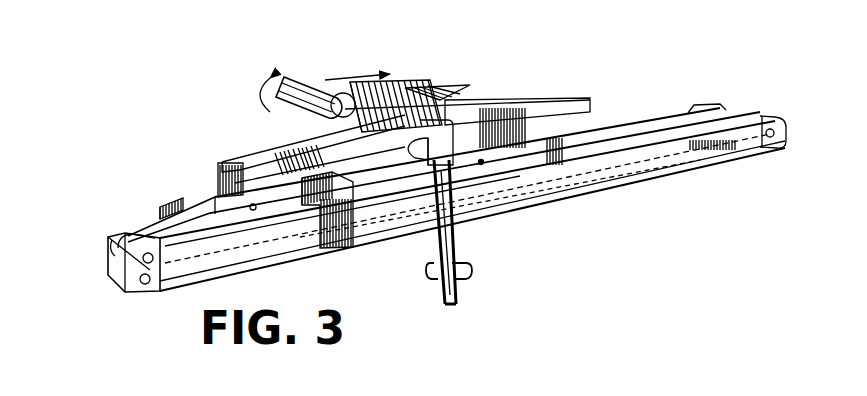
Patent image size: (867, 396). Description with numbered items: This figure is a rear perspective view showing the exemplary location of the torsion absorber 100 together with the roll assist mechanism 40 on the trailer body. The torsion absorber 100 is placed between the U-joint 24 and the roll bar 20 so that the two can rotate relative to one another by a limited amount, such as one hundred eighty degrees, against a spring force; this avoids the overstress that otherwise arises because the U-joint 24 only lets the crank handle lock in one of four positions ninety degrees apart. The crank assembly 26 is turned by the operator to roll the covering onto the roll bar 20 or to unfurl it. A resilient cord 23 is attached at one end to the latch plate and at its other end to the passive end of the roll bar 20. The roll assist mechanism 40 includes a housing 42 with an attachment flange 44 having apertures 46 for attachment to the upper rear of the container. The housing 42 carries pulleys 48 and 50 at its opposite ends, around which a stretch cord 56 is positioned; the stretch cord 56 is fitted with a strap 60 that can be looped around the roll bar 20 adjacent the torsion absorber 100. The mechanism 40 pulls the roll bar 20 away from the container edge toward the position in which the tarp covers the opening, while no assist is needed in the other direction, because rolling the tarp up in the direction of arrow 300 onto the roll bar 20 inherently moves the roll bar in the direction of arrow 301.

The roll bar 20 is at (395, 95).
The resilient cord 23 is at (430, 230).
The U-joint 24 is at (445, 130).
The crank assembly 26 is at (457, 233).
The roll assist mechanism 40 is at (421, 188).
The housing 42 is at (648, 155).
The attachment flange 44 is at (617, 130).
The apertures 46 is at (697, 110).
The pulley 48 is at (112, 252).
The pulley 50 is at (760, 116).
The stretch cord 56 is at (148, 240).
The strap 60 is at (295, 145).
The torsion absorber 100 is at (420, 90).
The arrow 300 is at (258, 96).
The arrow 301 is at (353, 76).